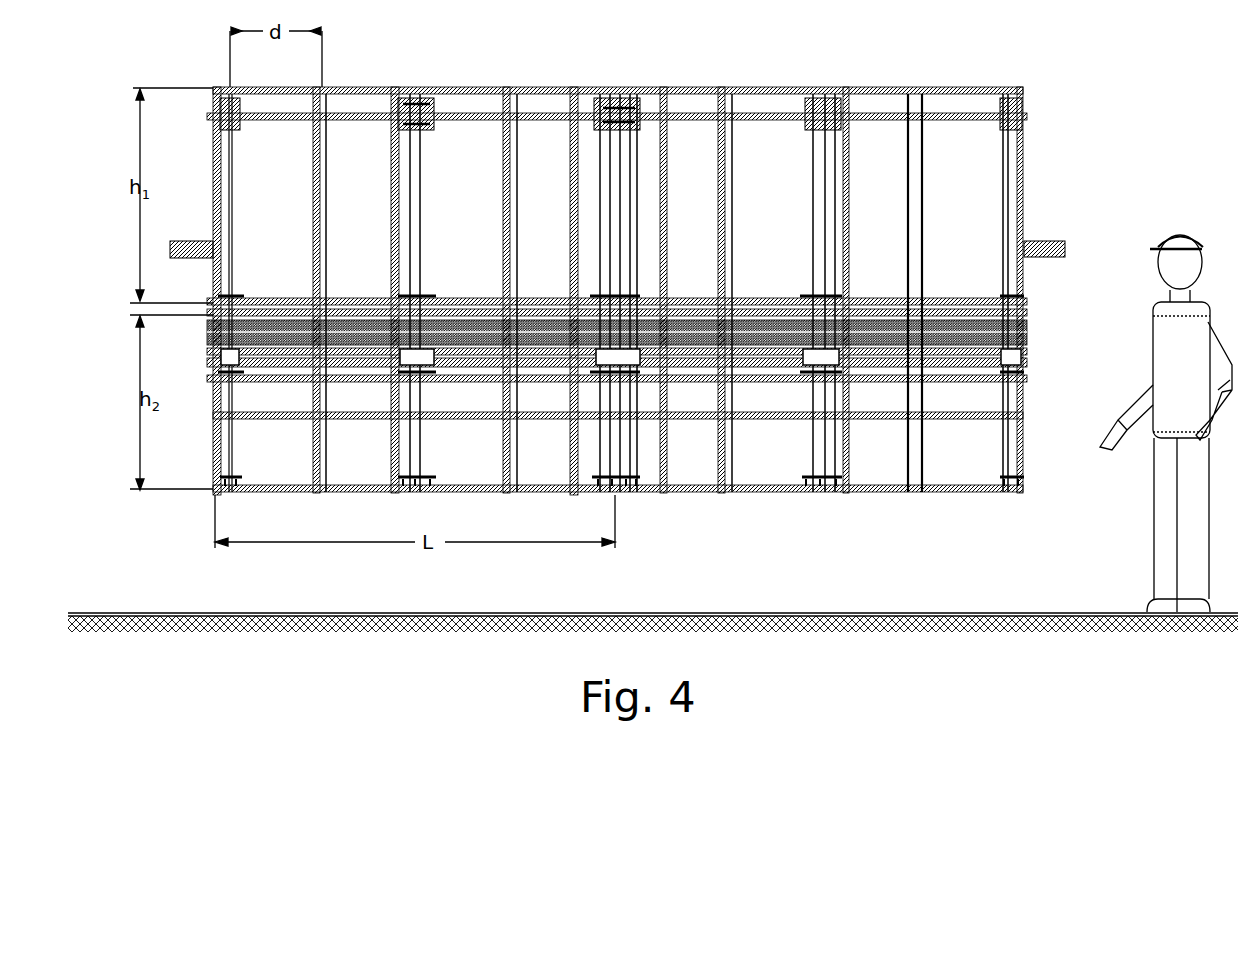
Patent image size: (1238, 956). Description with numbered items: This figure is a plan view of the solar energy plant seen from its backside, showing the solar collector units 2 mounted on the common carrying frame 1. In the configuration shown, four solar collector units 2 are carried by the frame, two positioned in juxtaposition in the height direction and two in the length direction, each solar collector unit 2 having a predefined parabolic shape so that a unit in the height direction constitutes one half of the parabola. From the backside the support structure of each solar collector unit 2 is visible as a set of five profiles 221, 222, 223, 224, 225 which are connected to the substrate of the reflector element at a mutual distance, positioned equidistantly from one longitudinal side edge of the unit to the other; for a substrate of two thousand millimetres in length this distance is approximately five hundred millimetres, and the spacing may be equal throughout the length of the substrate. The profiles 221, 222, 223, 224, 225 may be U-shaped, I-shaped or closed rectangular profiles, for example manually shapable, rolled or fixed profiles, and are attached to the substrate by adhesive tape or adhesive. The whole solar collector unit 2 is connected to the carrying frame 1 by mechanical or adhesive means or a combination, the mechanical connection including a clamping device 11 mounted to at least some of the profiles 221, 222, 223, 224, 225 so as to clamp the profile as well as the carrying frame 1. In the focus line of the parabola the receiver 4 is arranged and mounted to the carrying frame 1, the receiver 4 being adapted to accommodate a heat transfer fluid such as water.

The carrying frame 1 is at (275, 420).
The solar collector unit 2 is at (414, 48).
The clamping device 11 is at (435, 102).
The profile 221 is at (233, 231).
The profile 222 is at (328, 213).
The profile 223 is at (423, 201).
The profile 224 is at (510, 243).
The profile 225 is at (609, 95).
The receiver 4 is at (1042, 250).